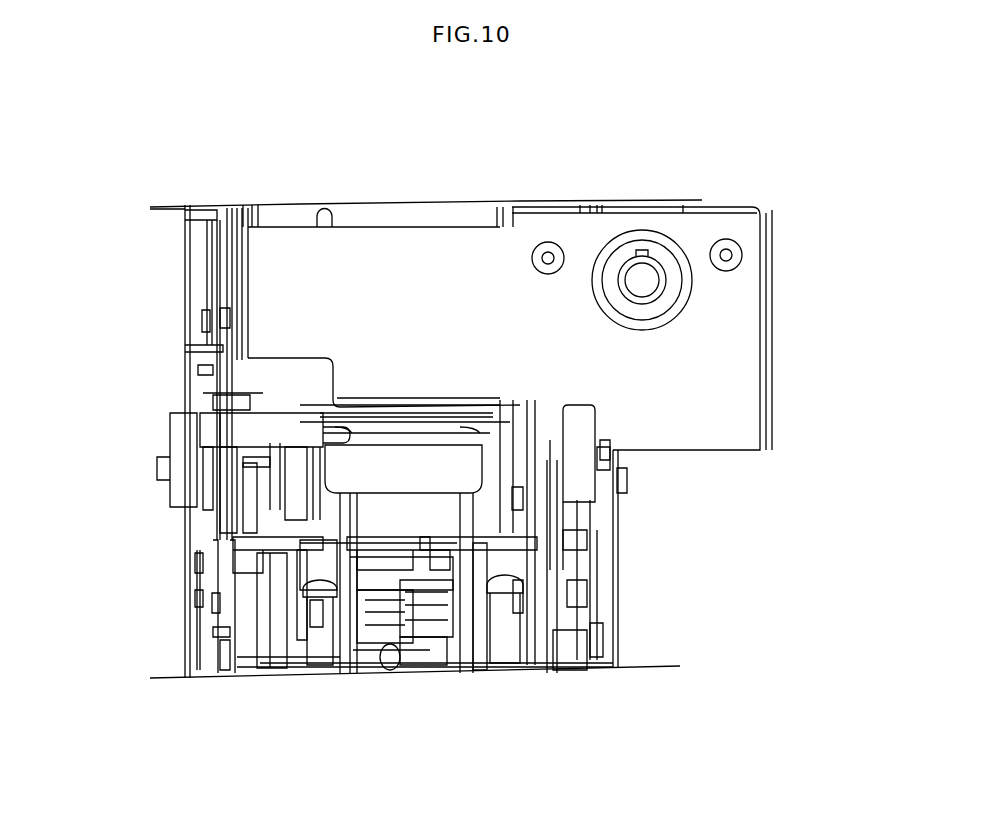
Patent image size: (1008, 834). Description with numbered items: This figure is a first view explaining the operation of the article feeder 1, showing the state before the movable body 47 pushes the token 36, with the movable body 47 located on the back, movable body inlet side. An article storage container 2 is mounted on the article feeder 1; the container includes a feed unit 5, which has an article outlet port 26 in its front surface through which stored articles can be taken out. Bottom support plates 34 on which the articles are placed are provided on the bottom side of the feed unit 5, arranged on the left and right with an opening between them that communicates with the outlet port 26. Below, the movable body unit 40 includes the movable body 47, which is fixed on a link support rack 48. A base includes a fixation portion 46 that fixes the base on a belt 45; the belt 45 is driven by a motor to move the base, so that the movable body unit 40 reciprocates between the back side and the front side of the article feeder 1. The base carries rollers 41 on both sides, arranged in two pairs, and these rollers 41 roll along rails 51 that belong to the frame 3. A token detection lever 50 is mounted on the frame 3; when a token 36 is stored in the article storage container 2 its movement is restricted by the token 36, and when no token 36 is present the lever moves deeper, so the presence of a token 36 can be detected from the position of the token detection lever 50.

The article feeder 1 is at (716, 613).
The article storage container 2 is at (823, 333).
The frame 3 is at (618, 553).
The feed unit 5 is at (680, 373).
The article outlet port 26 is at (263, 405).
The bottom support plates 34 is at (170, 428).
The token 36 is at (440, 423).
The movable body unit 40 is at (411, 432).
The rollers 41 is at (307, 557).
The belt 45 is at (385, 630).
The fixation portion 46 is at (398, 658).
The movable body 47 is at (385, 436).
The link support rack 48 is at (335, 472).
The token detection lever 50 is at (270, 452).
The rails 51 is at (335, 610).